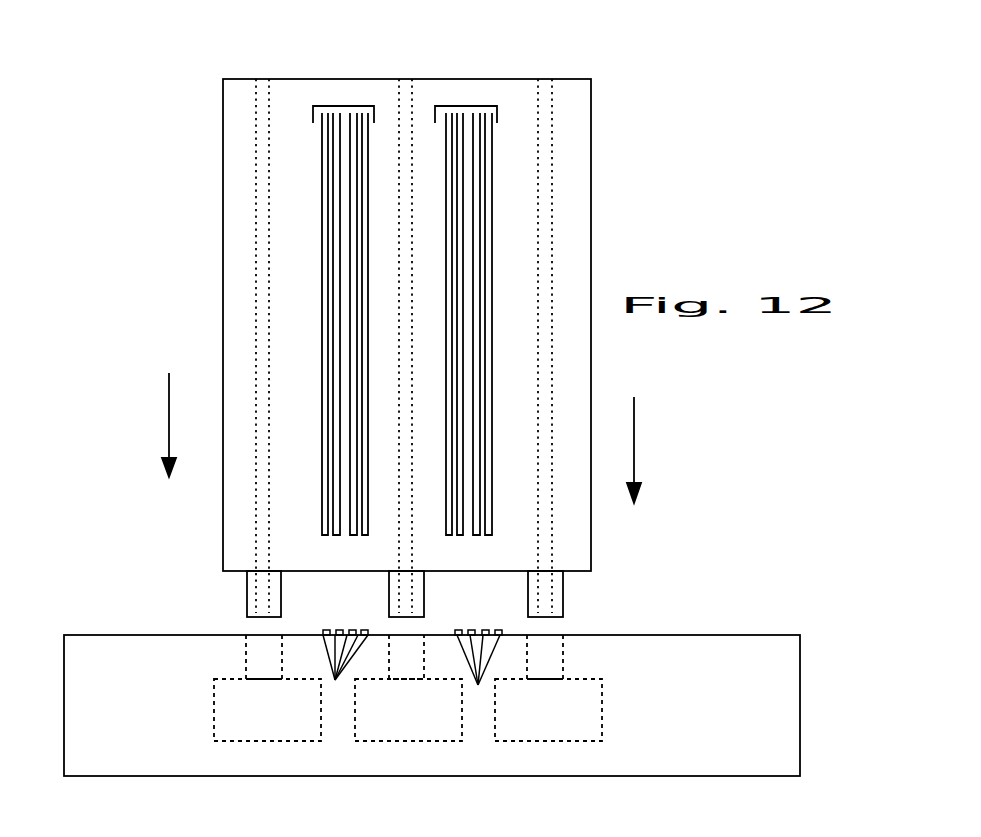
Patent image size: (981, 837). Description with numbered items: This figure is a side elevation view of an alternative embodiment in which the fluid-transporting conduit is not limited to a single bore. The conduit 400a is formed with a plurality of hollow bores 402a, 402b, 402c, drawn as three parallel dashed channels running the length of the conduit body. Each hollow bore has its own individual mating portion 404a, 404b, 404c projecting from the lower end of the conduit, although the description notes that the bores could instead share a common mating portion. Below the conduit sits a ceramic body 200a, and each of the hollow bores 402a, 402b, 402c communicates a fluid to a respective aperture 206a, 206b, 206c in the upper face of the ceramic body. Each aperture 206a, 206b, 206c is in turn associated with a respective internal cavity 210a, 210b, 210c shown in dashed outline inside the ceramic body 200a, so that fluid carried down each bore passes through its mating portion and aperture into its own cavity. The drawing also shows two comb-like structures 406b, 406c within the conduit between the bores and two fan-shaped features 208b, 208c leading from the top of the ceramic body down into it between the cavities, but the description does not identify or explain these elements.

The conduit 400a is at (622, 142).
The hollow bore 402a is at (274, 86).
The hollow bore 402b is at (412, 89).
The hollow bore 402c is at (551, 89).
The comb electrode structure 406b is at (343, 106).
The comb electrode structure 406c is at (466, 106).
The mating portion 404a is at (247, 582).
The mating portion 404b is at (424, 607).
The mating portion 404c is at (563, 581).
The ceramic body 200a is at (432, 705).
The aperture 206a is at (245, 655).
The aperture 206b is at (388, 643).
The aperture 206c is at (563, 660).
The conductive trace fan-out 208b is at (335, 680).
The conductive trace fan-out 208c is at (478, 685).
The internal cavity 210a is at (267, 710).
The internal cavity 210b is at (408, 710).
The internal cavity 210c is at (548, 710).